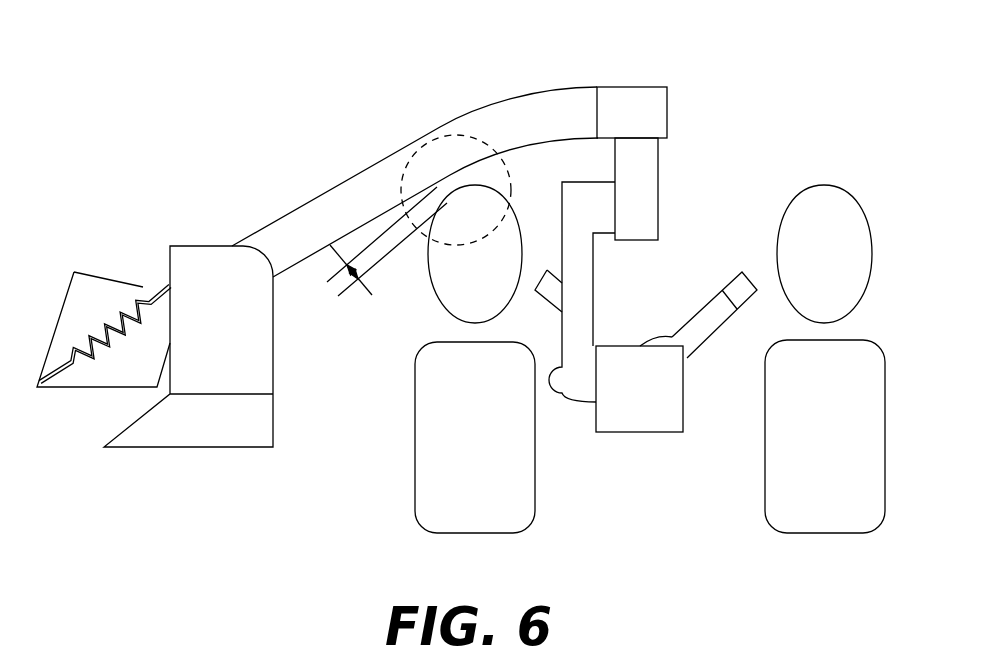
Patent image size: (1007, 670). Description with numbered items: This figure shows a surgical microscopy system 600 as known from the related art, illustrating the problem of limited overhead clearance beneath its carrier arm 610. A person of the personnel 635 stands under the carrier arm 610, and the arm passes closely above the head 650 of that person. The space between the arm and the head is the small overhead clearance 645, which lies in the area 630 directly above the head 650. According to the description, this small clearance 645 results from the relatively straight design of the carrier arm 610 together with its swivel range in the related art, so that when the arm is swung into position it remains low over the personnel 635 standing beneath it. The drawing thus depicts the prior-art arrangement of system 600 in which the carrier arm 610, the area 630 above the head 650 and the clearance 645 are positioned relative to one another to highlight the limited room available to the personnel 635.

The surgical microscopy system 600 is at (267, 89).
The carrier arm 610 is at (386, 157).
The area above the head 630 is at (489, 148).
The personnel 635 is at (438, 418).
The small overhead clearance 645 is at (347, 275).
The head 650 is at (450, 262).